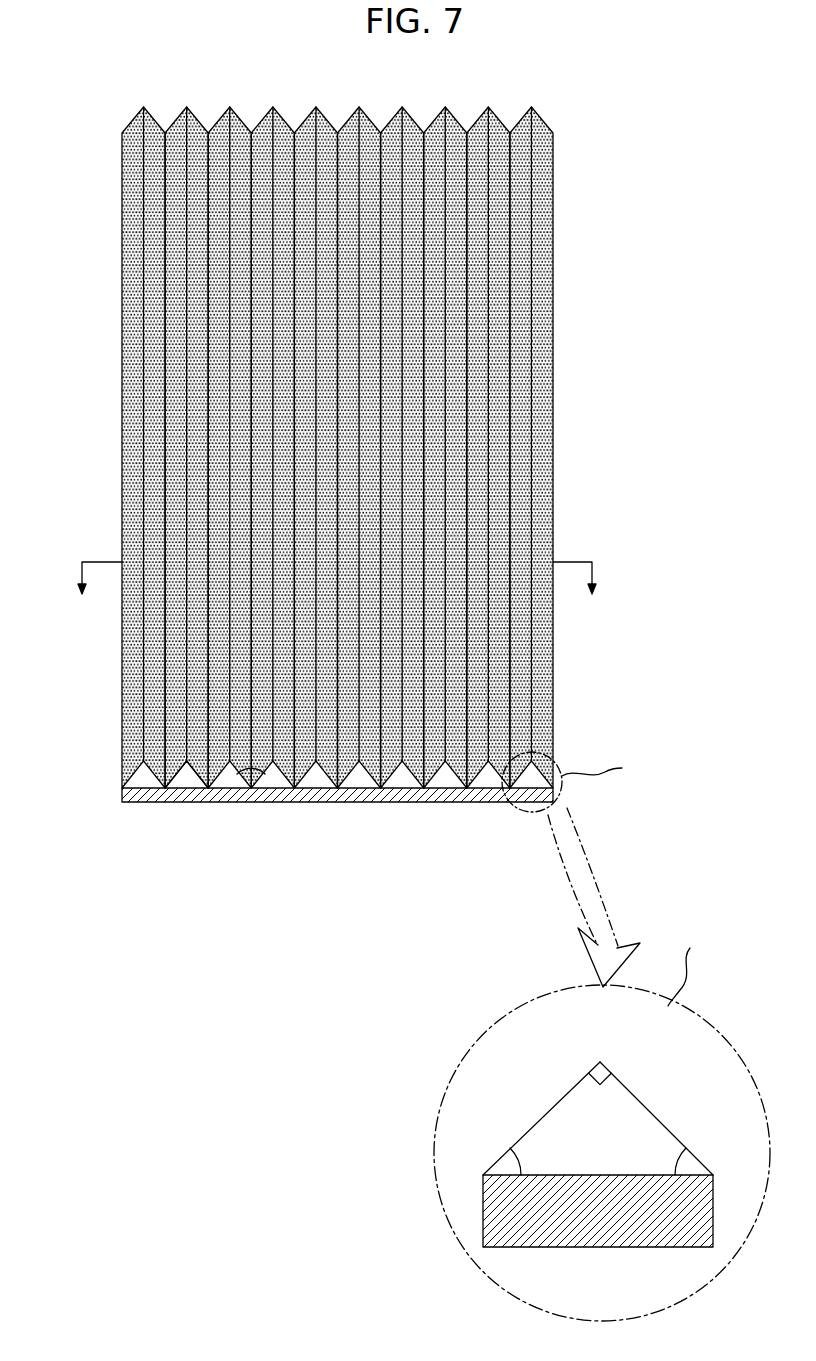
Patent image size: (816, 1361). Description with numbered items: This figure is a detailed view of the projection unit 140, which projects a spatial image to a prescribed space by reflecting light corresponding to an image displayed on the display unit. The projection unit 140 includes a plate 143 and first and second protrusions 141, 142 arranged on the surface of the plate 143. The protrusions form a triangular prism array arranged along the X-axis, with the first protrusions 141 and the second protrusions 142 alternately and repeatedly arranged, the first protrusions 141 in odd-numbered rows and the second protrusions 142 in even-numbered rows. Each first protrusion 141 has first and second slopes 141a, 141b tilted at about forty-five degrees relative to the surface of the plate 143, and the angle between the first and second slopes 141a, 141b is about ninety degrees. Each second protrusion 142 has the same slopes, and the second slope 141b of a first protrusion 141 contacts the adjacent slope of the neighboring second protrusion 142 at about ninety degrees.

The projection unit 140 is at (62, 110).
The first protrusion 141 is at (138, 772).
The first slope 141a is at (541, 1115).
The second slope 141b is at (641, 1100).
The second protrusion 142 is at (178, 773).
The plate 143 is at (458, 803).